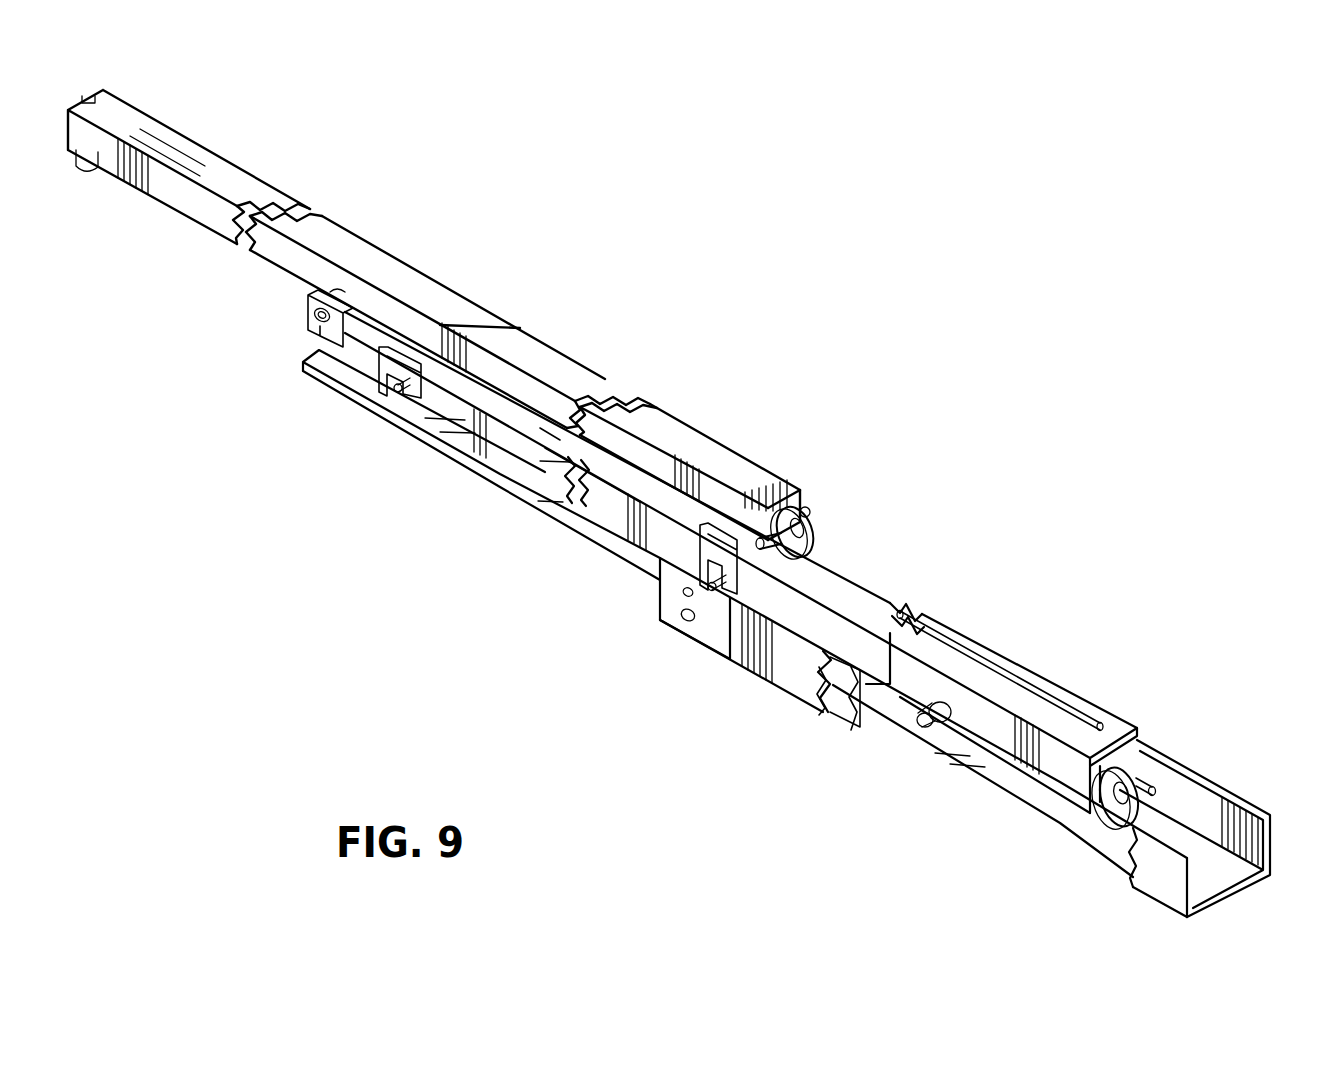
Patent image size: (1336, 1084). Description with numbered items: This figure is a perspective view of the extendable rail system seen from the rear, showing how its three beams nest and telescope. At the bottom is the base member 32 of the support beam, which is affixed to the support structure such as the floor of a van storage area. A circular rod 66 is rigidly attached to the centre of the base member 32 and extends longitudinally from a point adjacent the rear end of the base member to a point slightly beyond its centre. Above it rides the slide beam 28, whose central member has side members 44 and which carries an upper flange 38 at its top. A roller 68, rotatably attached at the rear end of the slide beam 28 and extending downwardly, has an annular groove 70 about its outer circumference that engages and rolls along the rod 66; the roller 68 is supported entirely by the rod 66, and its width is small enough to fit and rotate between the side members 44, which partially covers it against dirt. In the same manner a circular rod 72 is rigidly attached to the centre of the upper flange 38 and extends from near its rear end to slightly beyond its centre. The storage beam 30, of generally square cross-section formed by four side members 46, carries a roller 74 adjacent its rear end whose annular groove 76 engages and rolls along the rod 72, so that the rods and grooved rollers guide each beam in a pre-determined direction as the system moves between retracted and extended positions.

The slide beam 28 is at (1093, 698).
The storage beam 30 is at (720, 438).
The base member 32 is at (1213, 902).
The upper flange 38 is at (543, 424).
The side members 44 is at (540, 478).
The side members 46 is at (277, 257).
The circular rod 66 is at (1260, 873).
The roller 68 is at (1154, 793).
The annular groove 70 is at (1142, 752).
The circular rod 72 is at (1000, 660).
The roller 74 is at (815, 537).
The annular groove 76 is at (800, 504).